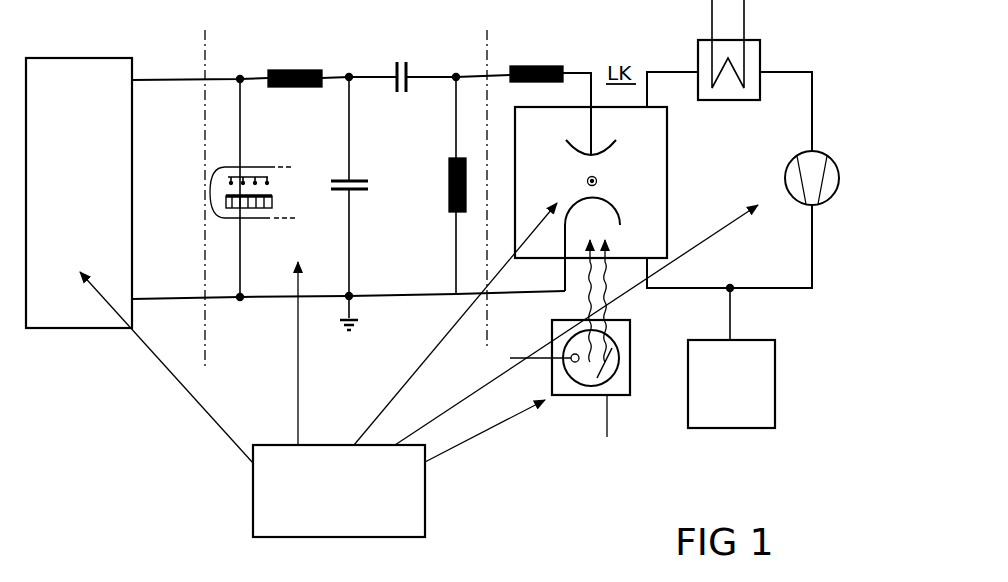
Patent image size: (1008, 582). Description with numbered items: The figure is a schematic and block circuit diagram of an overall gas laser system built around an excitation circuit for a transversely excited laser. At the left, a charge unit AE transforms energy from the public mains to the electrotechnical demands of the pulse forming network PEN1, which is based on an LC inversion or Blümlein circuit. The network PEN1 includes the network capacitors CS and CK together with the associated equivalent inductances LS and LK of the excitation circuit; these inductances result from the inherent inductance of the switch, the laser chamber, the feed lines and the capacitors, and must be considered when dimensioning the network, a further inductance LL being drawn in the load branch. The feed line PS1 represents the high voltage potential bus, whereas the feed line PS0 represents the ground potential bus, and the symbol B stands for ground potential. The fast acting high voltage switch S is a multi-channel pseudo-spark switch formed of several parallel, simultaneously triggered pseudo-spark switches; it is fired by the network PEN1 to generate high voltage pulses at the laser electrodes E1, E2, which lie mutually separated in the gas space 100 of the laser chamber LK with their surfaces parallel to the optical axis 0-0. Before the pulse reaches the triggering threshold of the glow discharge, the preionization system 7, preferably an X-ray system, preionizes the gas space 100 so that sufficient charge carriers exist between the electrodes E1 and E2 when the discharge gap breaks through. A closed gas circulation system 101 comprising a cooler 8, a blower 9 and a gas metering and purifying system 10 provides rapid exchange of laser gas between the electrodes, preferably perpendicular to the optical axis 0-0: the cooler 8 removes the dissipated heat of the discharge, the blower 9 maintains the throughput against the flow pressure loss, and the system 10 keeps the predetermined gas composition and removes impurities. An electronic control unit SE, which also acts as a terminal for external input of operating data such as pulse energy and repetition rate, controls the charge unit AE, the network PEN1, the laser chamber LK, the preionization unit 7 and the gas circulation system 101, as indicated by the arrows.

The charge unit AE is at (70, 330).
The pulse forming network PEN1 is at (337, 19).
The equivalent inductance LS is at (296, 88).
The second network capacitor CK is at (403, 93).
The first network capacitor CS is at (370, 186).
The load inductor LL is at (449, 190).
The high voltage switch S is at (265, 218).
The ground potential B is at (361, 331).
The feed line PS0 is at (405, 300).
The feed line PS1 is at (496, 74).
The laser chamber LK is at (555, 66).
The gas space 100 is at (667, 178).
The laser electrode E1 is at (614, 150).
The laser electrode E2 is at (620, 218).
The optical axis 0-0 is at (586, 181).
The cooler 8 is at (760, 52).
The gas circulation system 101 is at (812, 86).
The blower 9 is at (839, 178).
The gas metering and purifying system 10 is at (775, 382).
The preionization system 7 is at (630, 362).
The electronic control unit SE is at (425, 500).